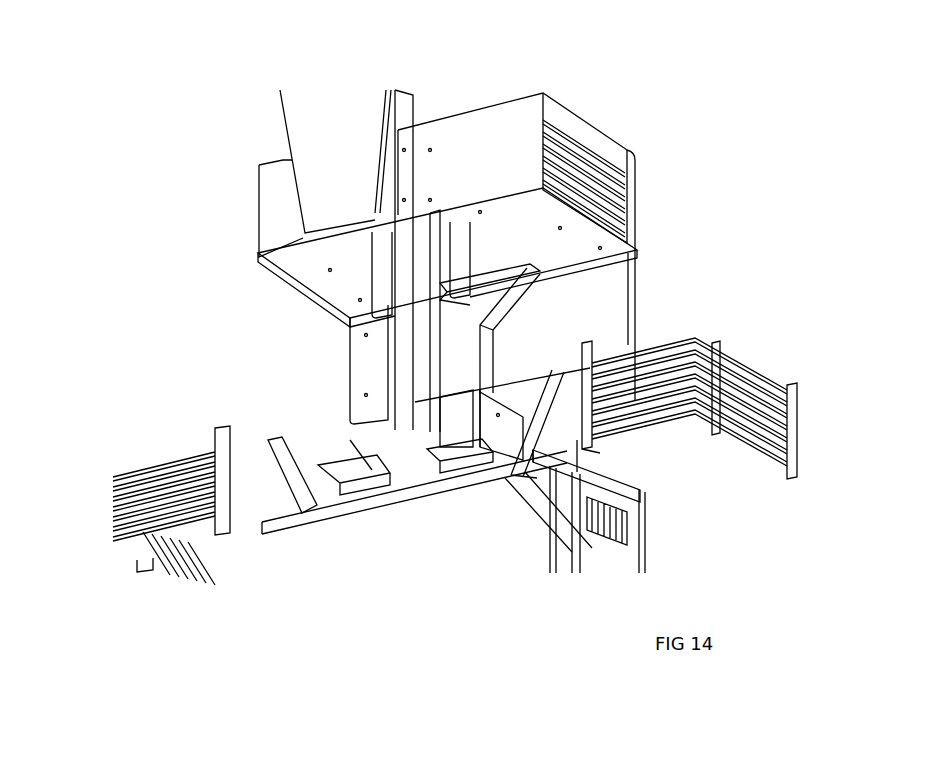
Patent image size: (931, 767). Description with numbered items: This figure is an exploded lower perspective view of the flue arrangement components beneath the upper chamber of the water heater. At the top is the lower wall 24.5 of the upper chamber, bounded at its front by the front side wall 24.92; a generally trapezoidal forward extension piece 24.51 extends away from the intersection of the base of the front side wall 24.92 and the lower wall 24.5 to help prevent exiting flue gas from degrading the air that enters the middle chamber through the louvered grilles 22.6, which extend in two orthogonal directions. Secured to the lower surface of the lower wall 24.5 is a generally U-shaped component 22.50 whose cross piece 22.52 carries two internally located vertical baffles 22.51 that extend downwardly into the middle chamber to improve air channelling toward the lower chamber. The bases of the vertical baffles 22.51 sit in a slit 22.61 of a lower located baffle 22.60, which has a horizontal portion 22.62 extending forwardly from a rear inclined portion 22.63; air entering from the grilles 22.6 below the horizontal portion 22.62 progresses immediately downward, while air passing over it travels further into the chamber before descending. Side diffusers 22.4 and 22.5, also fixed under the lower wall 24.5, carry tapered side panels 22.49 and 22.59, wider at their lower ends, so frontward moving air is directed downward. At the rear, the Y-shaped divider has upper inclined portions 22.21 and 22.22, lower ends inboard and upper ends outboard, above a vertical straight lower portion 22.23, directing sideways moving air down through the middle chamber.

The side diffuser 22.4 is at (577, 457).
The side panel 22.49 is at (537, 453).
The side diffuser 22.5 is at (222, 518).
The U-shaped component 22.50 is at (434, 236).
The vertical baffle 22.51 is at (380, 263).
The cross piece 22.52 is at (429, 232).
The side panel 22.59 is at (280, 475).
The grille 22.6 is at (745, 383).
The lower baffle 22.60 is at (322, 482).
The slit 22.61 is at (382, 473).
The horizontal portion 22.62 is at (356, 491).
The inclined portion 22.63 is at (390, 480).
The upper inclined portion 22.21 is at (445, 300).
The upper inclined portion 22.22 is at (470, 305).
The vertical straight lower portion 22.23 is at (492, 346).
The lower wall 24.5 is at (517, 225).
The forward extension piece 24.51 is at (492, 202).
The front side wall 24.92 is at (527, 162).